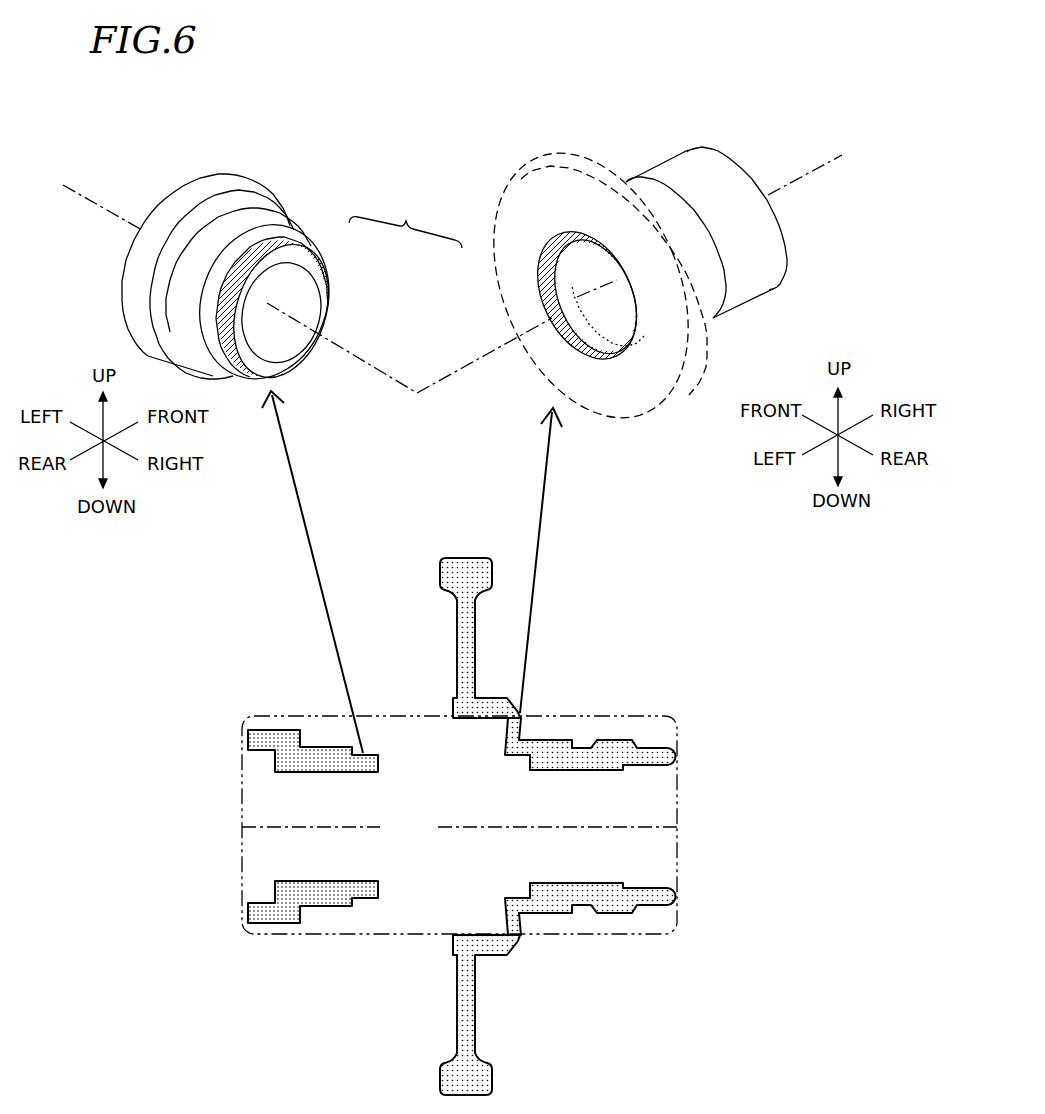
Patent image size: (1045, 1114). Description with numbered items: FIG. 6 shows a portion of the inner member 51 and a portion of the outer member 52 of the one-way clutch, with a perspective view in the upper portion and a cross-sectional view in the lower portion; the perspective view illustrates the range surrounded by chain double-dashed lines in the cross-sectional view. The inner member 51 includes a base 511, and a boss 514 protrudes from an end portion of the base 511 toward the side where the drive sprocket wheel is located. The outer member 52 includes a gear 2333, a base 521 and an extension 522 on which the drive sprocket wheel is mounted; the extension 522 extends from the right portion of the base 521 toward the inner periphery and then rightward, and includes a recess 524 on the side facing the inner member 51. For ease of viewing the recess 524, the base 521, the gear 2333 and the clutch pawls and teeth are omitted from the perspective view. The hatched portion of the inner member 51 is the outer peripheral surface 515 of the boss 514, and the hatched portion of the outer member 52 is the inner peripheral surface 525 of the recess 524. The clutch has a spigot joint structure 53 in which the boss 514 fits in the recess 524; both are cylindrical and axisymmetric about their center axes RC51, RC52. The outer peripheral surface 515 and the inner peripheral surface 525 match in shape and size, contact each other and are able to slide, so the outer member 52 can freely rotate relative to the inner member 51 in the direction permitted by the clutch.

The inner member 51 is at (206, 158).
The base 511 is at (237, 230).
The boss 514 is at (320, 270).
The outer peripheral surface 515 is at (275, 248).
The outer member 52 is at (676, 138).
The base 521 is at (488, 705).
The extension 522 is at (714, 288).
The recess 524 is at (535, 283).
The inner peripheral surface 525 is at (552, 245).
The spigot joint structure 53 is at (405, 219).
The gear 2333 is at (467, 570).
The center axis RC51 is at (378, 365).
The center axis RC52 is at (457, 367).